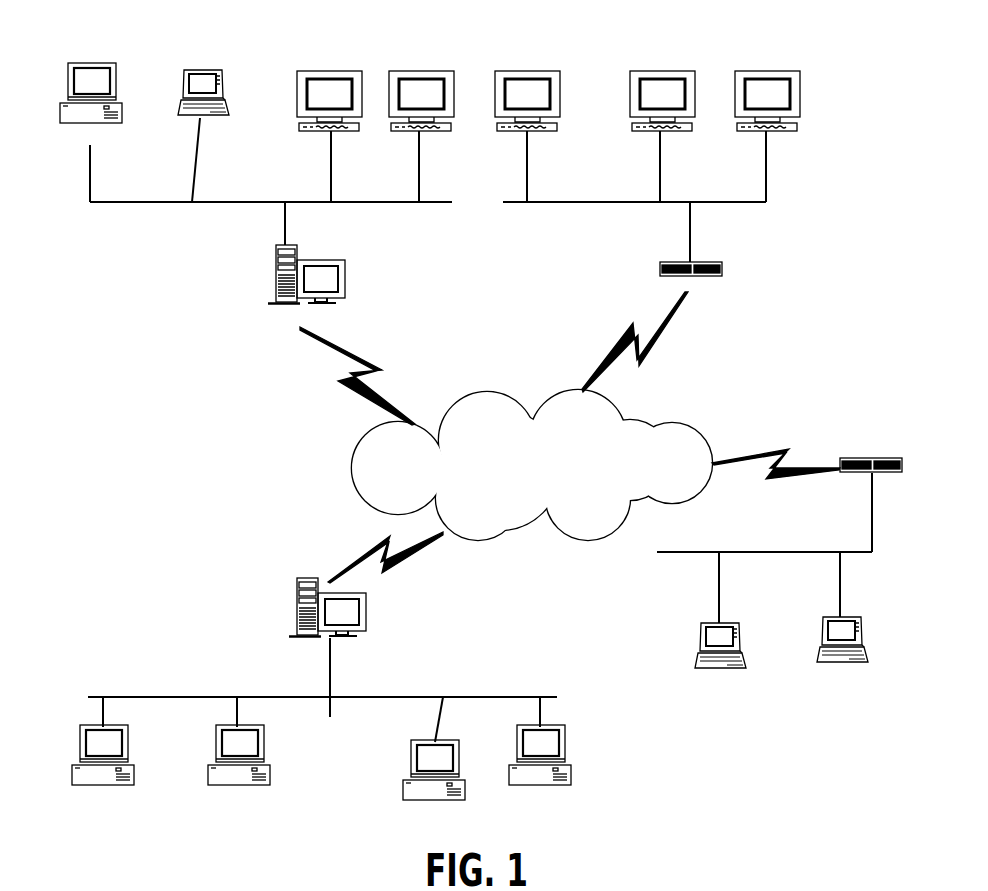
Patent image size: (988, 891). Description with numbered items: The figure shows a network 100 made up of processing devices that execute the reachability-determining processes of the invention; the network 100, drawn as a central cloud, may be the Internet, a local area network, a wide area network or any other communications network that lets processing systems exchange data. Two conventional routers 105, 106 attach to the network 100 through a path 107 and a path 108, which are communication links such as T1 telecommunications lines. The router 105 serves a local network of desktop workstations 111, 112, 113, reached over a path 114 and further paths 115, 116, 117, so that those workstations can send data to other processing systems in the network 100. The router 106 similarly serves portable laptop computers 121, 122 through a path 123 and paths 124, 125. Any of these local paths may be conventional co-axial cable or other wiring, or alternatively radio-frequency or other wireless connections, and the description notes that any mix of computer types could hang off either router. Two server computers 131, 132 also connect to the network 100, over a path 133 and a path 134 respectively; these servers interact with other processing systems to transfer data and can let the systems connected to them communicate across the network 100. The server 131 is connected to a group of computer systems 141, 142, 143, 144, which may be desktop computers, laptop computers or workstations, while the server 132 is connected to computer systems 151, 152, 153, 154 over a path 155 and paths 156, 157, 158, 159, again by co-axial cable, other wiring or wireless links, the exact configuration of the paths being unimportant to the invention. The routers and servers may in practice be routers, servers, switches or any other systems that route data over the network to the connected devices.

The network 100 is at (445, 395).
The router 105 is at (715, 262).
The router 106 is at (903, 458).
The path 107 is at (648, 357).
The path 108 is at (748, 457).
The workstation 111 is at (511, 72).
The workstation 112 is at (632, 72).
The workstation 113 is at (737, 72).
The path 114 is at (527, 204).
The path 115 is at (528, 172).
The path 116 is at (688, 180).
The path 117 is at (767, 172).
The laptop computer 121 is at (690, 690).
The laptop computer 122 is at (810, 690).
The path 123 is at (797, 552).
The path 124 is at (718, 604).
The path 125 is at (843, 592).
The server computer 131 is at (323, 263).
The server computer 132 is at (366, 615).
The path 133 is at (332, 350).
The path 134 is at (340, 568).
The computer system 141 is at (68, 73).
The computer system 142 is at (183, 70).
The computer system 143 is at (300, 100).
The computer system 144 is at (452, 100).
The computer system 151 is at (170, 762).
The computer system 152 is at (268, 778).
The computer system 153 is at (465, 788).
The computer system 154 is at (558, 715).
The path 155 is at (100, 204).
The path 156 is at (93, 162).
The path 157 is at (197, 165).
The path 158 is at (332, 166).
The path 159 is at (419, 188).